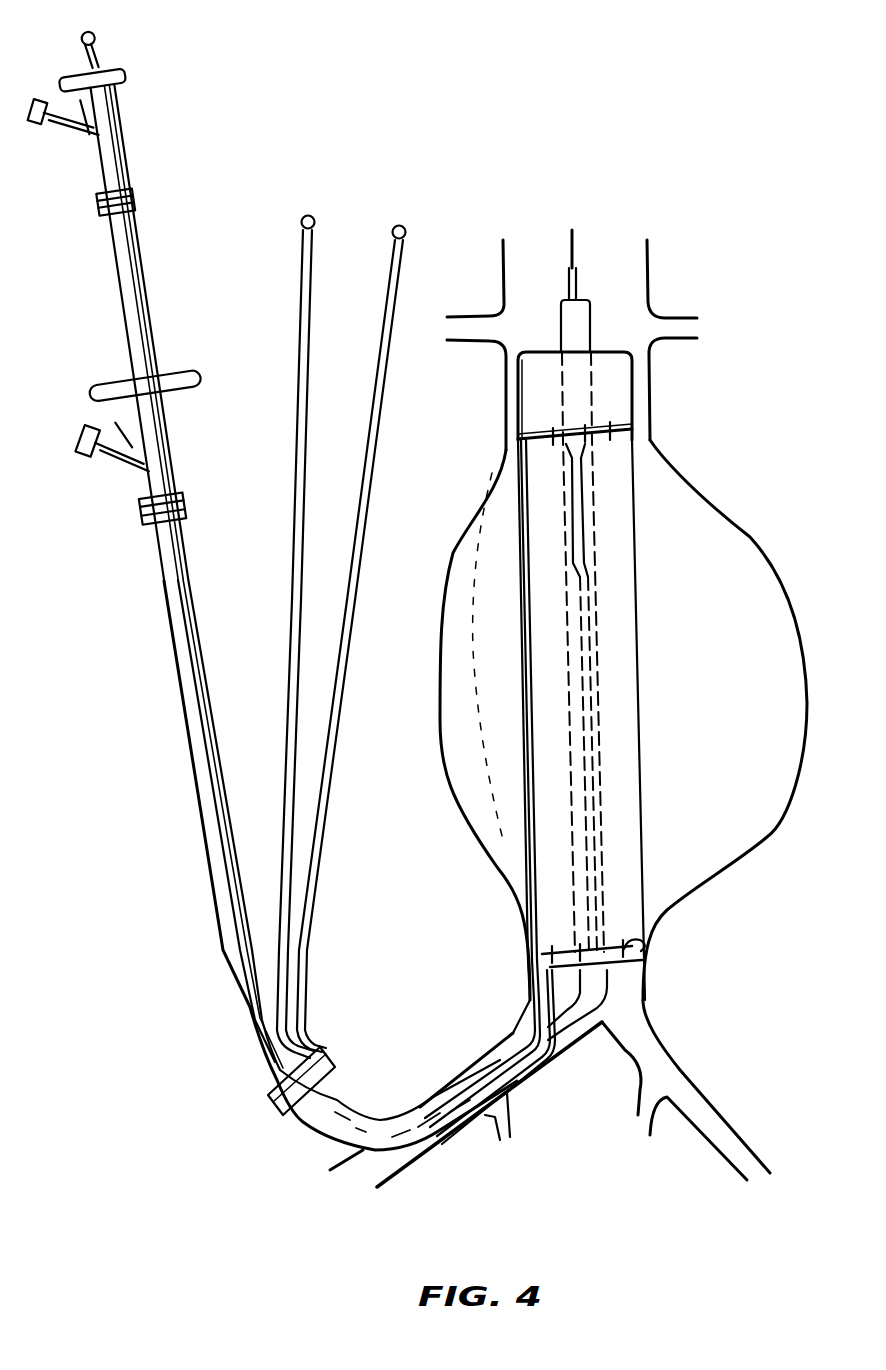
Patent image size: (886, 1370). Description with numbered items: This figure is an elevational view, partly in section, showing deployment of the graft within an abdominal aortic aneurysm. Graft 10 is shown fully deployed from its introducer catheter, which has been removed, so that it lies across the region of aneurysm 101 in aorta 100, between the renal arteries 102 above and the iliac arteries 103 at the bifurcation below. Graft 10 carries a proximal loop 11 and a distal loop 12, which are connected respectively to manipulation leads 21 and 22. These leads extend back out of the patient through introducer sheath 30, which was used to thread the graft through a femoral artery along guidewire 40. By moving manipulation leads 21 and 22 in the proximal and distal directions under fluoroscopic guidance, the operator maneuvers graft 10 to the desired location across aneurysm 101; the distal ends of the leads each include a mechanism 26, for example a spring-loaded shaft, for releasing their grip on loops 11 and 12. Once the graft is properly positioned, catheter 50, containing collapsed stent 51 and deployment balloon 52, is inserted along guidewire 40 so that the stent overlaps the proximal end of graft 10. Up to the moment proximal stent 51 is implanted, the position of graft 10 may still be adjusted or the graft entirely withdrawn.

The graft 10 is at (641, 708).
The proximal loop 11 is at (648, 441).
The distal loop 12 is at (640, 948).
The manipulation lead 21 is at (312, 336).
The manipulation lead 22 is at (389, 373).
The mechanism 26 is at (315, 229).
The introducer sheath 30 is at (387, 1122).
The guidewire 40 is at (96, 50).
The catheter 50 is at (178, 672).
The stent 51 is at (582, 326).
The deployment balloon 52 is at (588, 543).
The aorta 100 is at (651, 272).
The aneurysm 101 is at (752, 532).
The renal arteries 102 is at (684, 338).
The iliac arteries 103 is at (622, 1050).